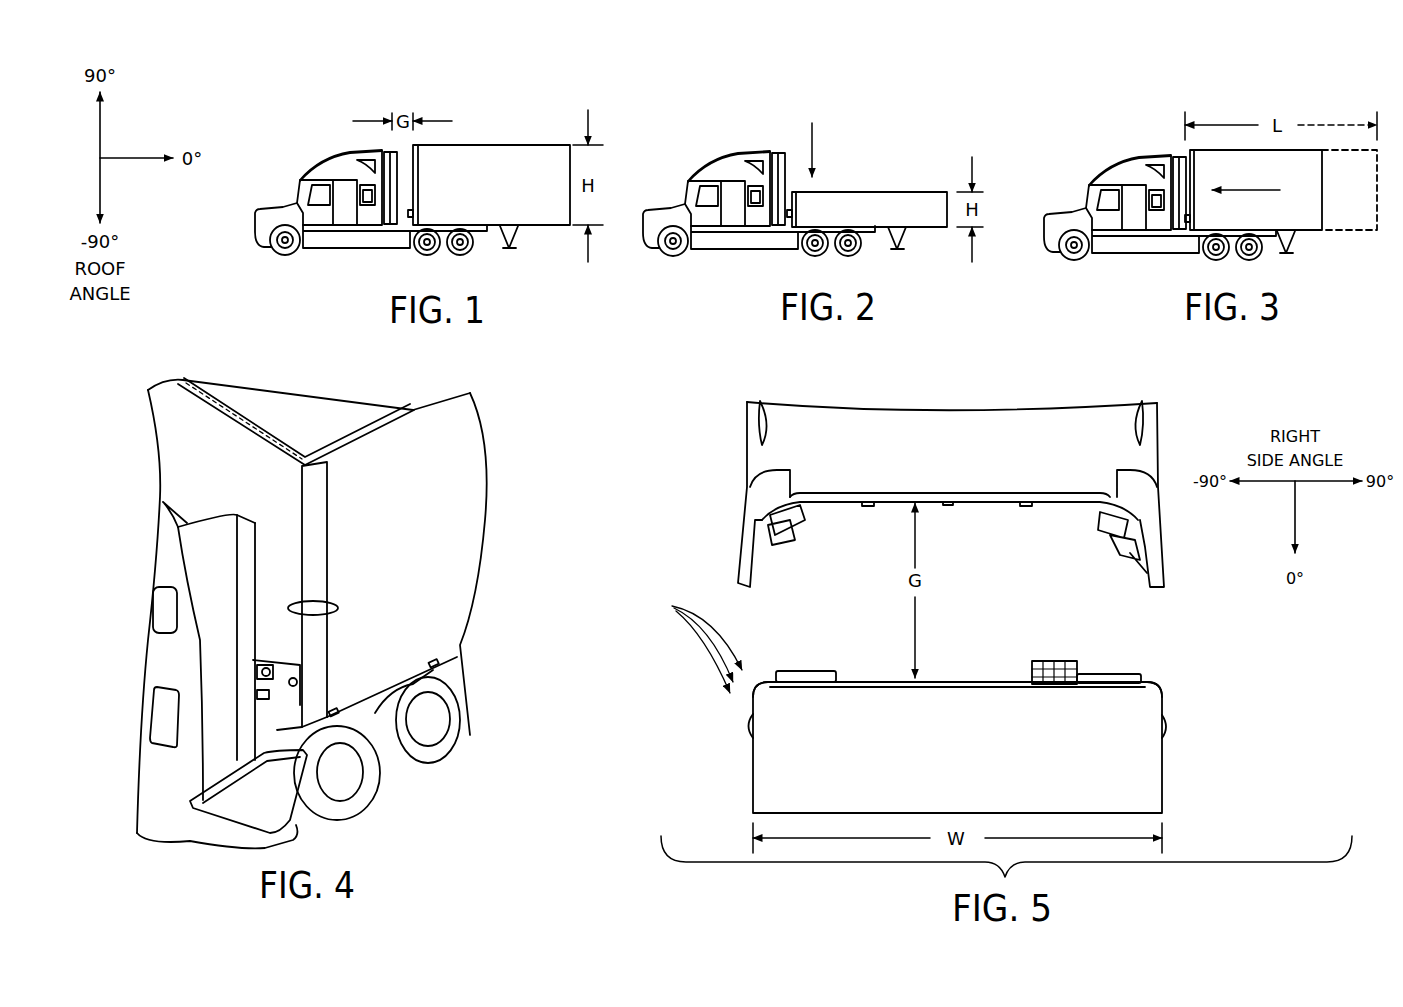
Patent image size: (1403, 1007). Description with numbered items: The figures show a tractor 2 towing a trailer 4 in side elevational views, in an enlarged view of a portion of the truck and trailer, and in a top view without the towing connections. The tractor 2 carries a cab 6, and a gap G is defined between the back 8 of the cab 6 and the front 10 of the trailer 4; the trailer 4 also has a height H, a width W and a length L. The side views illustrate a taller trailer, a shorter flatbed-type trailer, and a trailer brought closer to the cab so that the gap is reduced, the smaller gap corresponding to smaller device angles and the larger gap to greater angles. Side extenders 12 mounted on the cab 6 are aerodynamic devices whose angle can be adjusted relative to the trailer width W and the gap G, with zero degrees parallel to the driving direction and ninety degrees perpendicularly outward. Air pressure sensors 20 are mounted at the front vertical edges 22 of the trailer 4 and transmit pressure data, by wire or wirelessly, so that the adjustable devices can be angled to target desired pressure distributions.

In FIG. 1, the tractor 2 is at (298, 140).
In FIG. 2, the tractor 2 is at (688, 142).
In FIG. 3, the tractor 2 is at (1090, 143).
In FIG. 4, the tractor 2 is at (140, 605).
In FIG. 5, the tractor 2 is at (916, 392).
In FIG. 1, the trailer 4 is at (510, 128).
In FIG. 2, the trailer 4 is at (898, 178).
In FIG. 3, the trailer 4 is at (1317, 240).
In FIG. 4, the trailer 4 is at (240, 377).
In FIG. 5, the trailer 4 is at (1167, 749).
In FIG. 1, the cab 6 is at (345, 155).
In FIG. 2, the cab 6 is at (730, 155).
In FIG. 3, the cab 6 is at (1133, 158).
In FIG. 4, the cab 6 is at (148, 782).
In FIG. 5, the cab 6 is at (1015, 422).
In FIG. 5, the back of the cab 8 is at (990, 503).
In FIG. 4, the front of the trailer 10 is at (170, 438).
In FIG. 5, the front of the trailer 10 is at (981, 676).
In FIG. 1, the side extenders 12 is at (385, 224).
In FIG. 2, the side extenders 12 is at (775, 225).
In FIG. 3, the side extenders 12 is at (1178, 228).
In FIG. 4, the side extenders 12 is at (220, 537).
In FIG. 5, the side extenders 12 is at (765, 520).
In FIG. 4, the sensors 20 is at (337, 608).
In FIG. 5, the sensors 20 is at (672, 606).
In FIG. 4, the front vertical edges of the trailer 22 is at (315, 473).
In FIG. 5, the front vertical edges of the trailer 22 is at (759, 689).